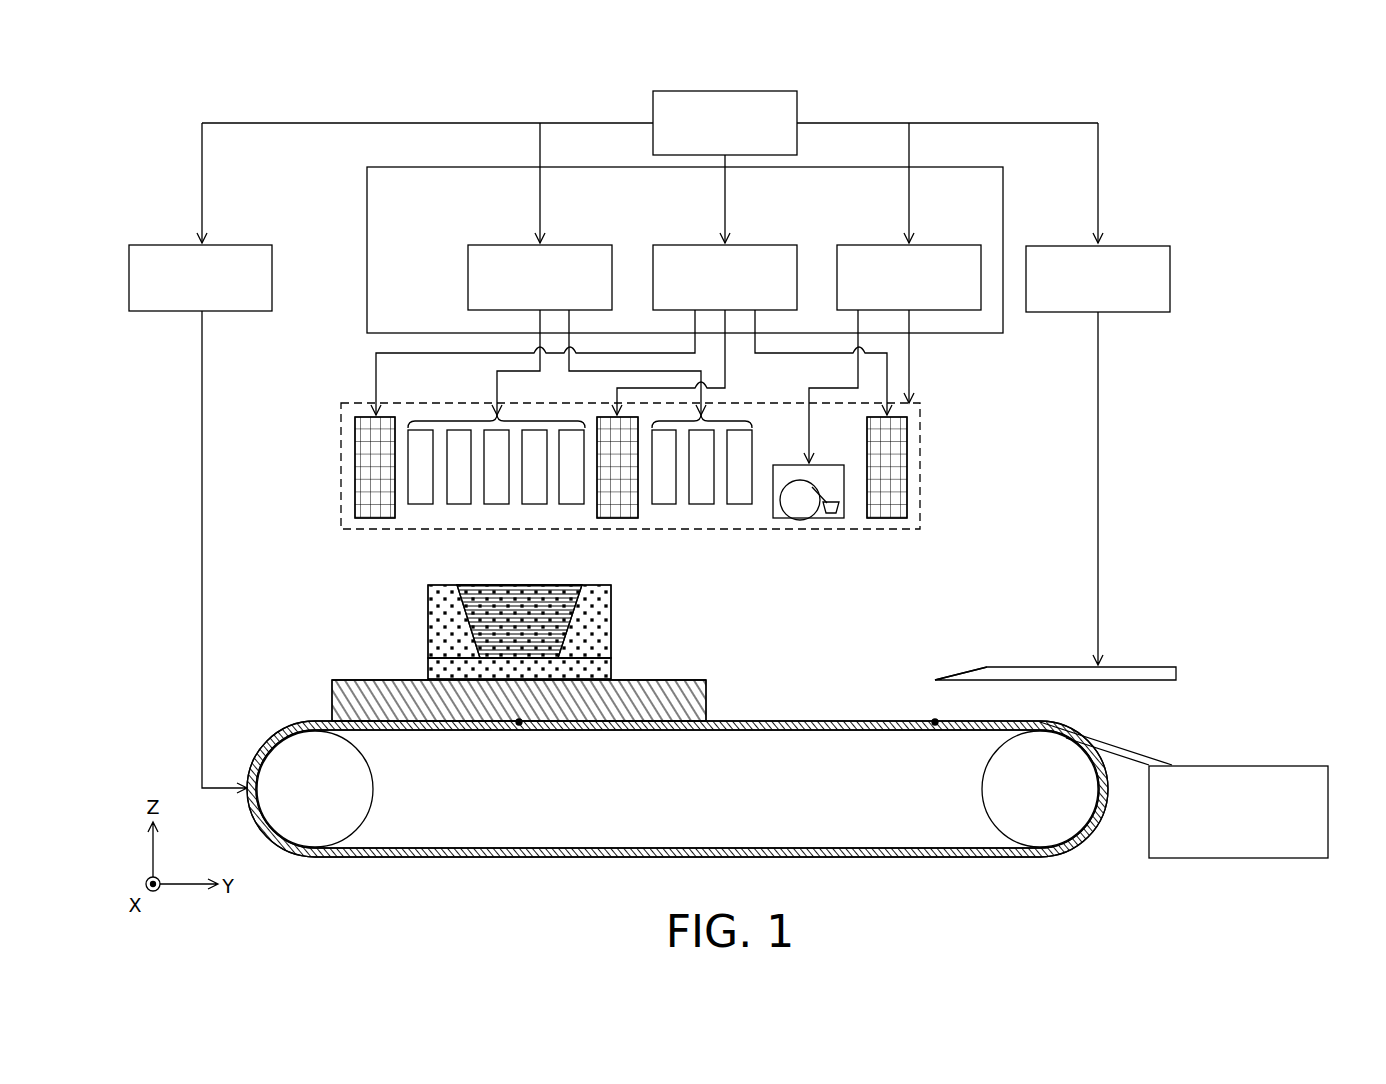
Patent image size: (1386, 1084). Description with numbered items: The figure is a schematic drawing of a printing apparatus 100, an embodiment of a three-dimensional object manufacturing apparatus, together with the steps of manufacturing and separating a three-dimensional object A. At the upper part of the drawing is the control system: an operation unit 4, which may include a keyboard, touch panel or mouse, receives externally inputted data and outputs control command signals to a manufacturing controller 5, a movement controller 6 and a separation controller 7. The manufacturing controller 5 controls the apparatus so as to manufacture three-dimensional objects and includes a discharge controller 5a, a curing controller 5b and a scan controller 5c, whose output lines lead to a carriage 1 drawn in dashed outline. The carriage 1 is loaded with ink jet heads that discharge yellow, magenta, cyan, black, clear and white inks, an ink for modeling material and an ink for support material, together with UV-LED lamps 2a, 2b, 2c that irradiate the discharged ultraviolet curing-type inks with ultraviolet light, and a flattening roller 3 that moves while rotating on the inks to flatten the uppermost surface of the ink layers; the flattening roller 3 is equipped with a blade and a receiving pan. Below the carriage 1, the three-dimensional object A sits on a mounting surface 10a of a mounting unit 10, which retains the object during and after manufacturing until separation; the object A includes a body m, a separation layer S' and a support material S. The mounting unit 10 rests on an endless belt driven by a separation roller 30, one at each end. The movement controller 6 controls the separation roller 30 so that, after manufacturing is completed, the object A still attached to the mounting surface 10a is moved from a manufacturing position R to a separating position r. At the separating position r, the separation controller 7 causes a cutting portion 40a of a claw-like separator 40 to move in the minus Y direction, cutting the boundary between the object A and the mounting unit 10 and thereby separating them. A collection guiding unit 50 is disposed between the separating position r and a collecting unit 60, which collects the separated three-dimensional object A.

The printing apparatus 100 is at (1258, 118).
The carriage 1 is at (920, 441).
The UV-LED lamp 2a is at (373, 518).
The UV-LED lamp 2b is at (614, 518).
The UV-LED lamp 2c is at (884, 518).
The flattening roller 3 is at (822, 518).
The operation unit 4 is at (752, 91).
The manufacturing controller 5 is at (462, 167).
The discharge controller 5a is at (572, 245).
The curing controller 5b is at (757, 245).
The scan controller 5c is at (941, 245).
The movement controller 6 is at (232, 245).
The separation controller 7 is at (1128, 246).
The mounting unit 10 is at (706, 700).
The mounting surface 10a is at (690, 680).
The separation roller 30 is at (312, 848).
The separator 40 is at (1138, 667).
The cutting portion 40a is at (962, 674).
The collection guiding unit 50 is at (1130, 742).
The collecting unit 60 is at (1237, 858).
The three-dimensional object A is at (370, 598).
The support material S is at (500, 621).
The body m is at (487, 638).
The separation layer S' is at (499, 668).
The manufacturing position R is at (519, 725).
The separating position r is at (935, 725).